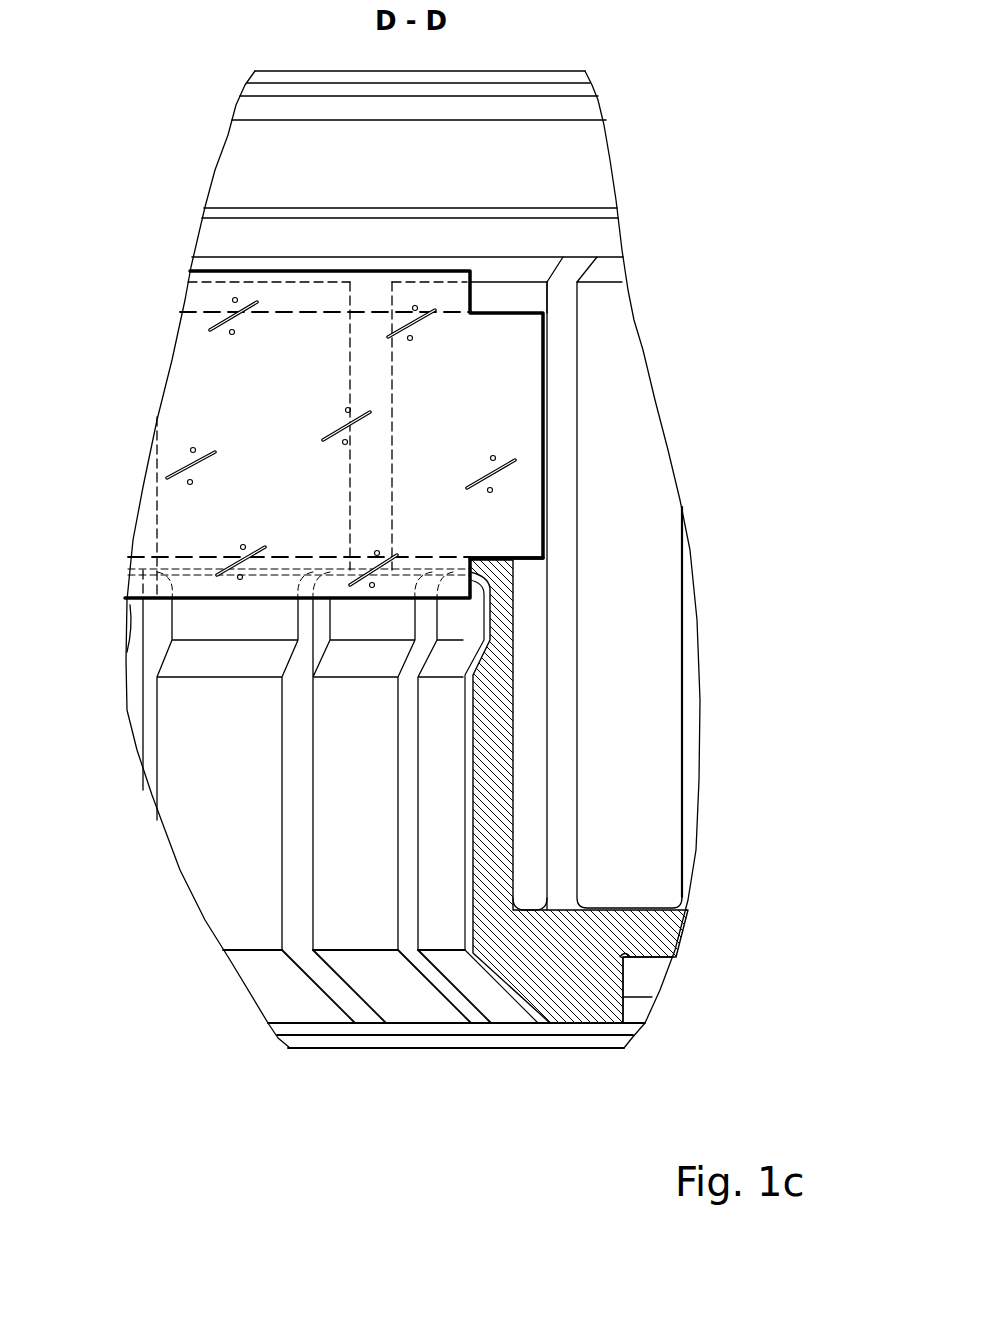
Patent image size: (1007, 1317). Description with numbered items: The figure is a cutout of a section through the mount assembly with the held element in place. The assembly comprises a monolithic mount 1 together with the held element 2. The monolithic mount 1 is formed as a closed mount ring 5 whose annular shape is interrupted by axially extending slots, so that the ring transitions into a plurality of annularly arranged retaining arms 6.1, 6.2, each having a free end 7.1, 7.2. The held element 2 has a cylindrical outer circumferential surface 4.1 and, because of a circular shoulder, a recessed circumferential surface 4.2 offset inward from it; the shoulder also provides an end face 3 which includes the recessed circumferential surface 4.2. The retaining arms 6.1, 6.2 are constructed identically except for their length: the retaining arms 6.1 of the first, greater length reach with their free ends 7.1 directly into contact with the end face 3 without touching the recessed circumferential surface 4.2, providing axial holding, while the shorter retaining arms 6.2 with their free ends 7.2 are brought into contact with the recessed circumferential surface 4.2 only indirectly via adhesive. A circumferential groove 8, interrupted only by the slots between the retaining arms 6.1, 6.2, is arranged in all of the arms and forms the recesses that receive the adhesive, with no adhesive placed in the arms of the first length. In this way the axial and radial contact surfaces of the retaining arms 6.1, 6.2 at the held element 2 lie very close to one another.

The monolithic mount 1 is at (683, 52).
The held element 2 is at (257, 270).
The end face 3 is at (535, 560).
The outer circumferential surface 4.1 is at (555, 431).
The recessed circumferential surface 4.2 is at (483, 287).
The mount ring 5 is at (257, 163).
The retaining arms of first length 6.1 is at (493, 772).
The retaining arms of second length 6.2 is at (440, 837).
The free end of retaining arm 7.1 is at (503, 557).
The free end of retaining arm 7.2 is at (370, 608).
The circumferential groove 8 is at (490, 612).